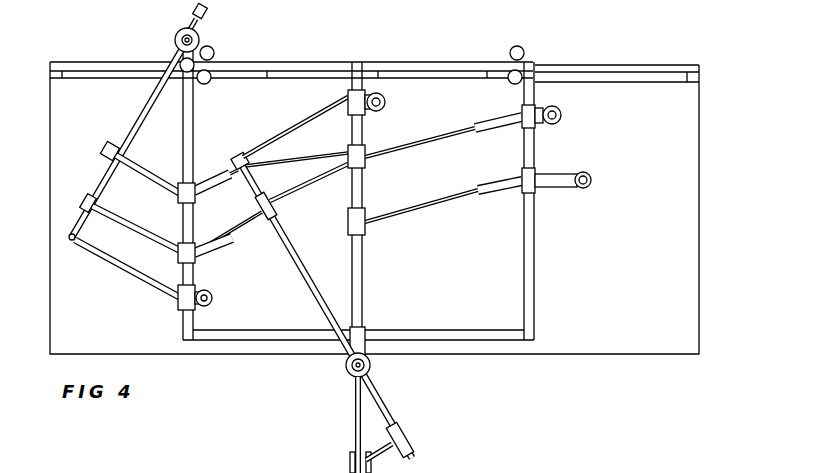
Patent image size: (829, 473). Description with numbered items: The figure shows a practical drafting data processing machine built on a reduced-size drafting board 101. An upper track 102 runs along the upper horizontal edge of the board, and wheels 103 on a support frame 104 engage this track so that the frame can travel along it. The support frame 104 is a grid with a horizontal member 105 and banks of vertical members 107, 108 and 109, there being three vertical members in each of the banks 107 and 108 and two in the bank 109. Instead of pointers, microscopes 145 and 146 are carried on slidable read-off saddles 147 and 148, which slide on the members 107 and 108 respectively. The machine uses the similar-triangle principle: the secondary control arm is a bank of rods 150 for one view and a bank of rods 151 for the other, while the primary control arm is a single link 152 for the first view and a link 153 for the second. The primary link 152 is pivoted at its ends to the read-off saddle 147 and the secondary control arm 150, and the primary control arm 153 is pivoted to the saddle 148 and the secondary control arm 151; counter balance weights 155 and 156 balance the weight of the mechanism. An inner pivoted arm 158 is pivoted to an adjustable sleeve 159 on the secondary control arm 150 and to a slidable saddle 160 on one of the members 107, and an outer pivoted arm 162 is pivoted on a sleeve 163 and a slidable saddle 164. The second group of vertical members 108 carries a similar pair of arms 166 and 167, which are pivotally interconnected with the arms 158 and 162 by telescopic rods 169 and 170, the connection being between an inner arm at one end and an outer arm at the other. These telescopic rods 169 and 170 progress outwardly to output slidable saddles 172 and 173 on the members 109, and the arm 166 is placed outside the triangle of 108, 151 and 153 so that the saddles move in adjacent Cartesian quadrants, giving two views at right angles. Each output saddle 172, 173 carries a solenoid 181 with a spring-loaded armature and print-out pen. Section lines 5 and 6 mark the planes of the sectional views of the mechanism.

The drafting board 101 is at (696, 203).
The upper track 102 is at (645, 65).
The wheels 103 is at (211, 77).
The support frame 104 is at (200, 103).
The horizontal member 105 is at (458, 62).
The vertical members 107 is at (187, 122).
The vertical members 108 is at (363, 275).
The vertical members 109 is at (534, 93).
The microscope 145 is at (213, 298).
The microscope 146 is at (386, 101).
The slidable read-off saddle 147 is at (184, 305).
The slidable read-off saddle 148 is at (348, 98).
The secondary control arm 150 is at (101, 183).
The secondary control arm 151 is at (328, 308).
The primary link 152 is at (132, 275).
The primary control arm 153 is at (282, 138).
The counter balance weight 155 is at (190, 8).
The counter balance weight 156 is at (412, 438).
The inner pivoted arm 158 is at (144, 173).
The adjustable sleeve 159 is at (112, 144).
The slidable saddle 160 is at (195, 179).
The outer pivoted arm 162 is at (120, 228).
The sleeve 163 is at (82, 203).
The slidable saddle 164 is at (197, 250).
The pivoted arm 166 is at (370, 447).
The pivoted arm 167 is at (304, 185).
The telescopic rod 169 is at (394, 148).
The telescopic rod 170 is at (398, 207).
The output slidable saddle 172 is at (544, 129).
The output slidable saddle 173 is at (539, 193).
The solenoid 181 is at (570, 116).
The section line 5- 5 is at (60, 246).
The section line 6- 6 is at (593, 180).